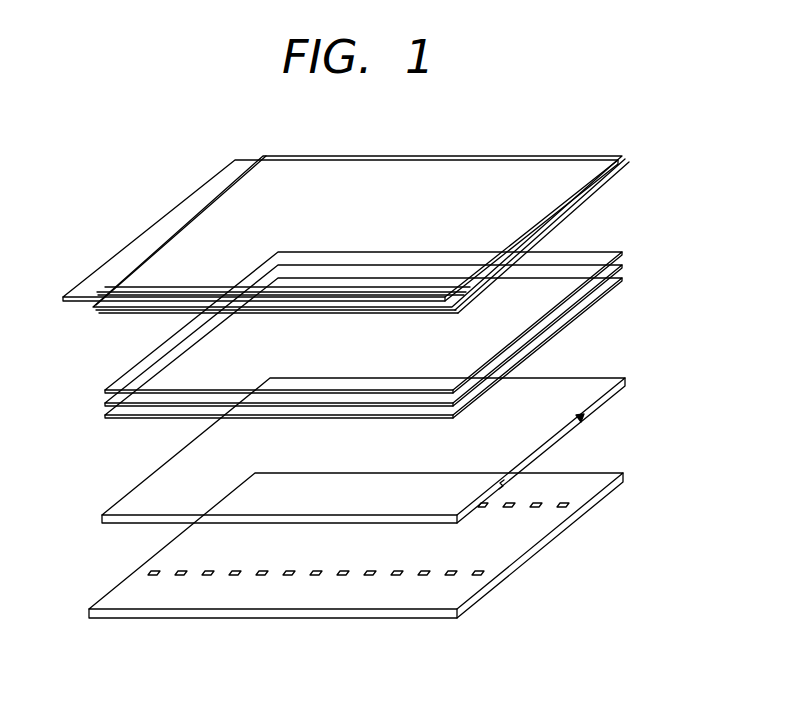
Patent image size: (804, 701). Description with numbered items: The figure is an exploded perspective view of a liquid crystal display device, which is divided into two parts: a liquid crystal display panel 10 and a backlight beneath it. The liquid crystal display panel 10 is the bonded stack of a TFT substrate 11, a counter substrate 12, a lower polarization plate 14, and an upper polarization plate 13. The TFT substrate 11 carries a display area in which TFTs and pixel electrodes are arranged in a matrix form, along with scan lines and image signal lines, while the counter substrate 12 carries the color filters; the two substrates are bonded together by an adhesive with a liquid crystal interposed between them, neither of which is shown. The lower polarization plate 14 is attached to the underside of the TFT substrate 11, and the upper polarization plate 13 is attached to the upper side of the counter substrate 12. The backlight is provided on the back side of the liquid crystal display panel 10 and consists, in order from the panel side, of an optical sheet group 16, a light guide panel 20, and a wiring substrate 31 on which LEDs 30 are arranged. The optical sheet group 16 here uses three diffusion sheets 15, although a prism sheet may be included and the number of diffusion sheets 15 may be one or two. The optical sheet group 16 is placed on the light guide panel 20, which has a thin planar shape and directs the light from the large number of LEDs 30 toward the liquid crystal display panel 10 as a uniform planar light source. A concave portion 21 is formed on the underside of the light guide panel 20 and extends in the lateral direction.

The liquid crystal display panel 10 is at (686, 80).
The TFT substrate 11 is at (610, 176).
The counter substrate 12 is at (601, 178).
The upper polarization plate 13 is at (545, 175).
The lower polarization plate 14 is at (427, 310).
The diffusion sheet 15 is at (622, 251).
The optical sheet group 16 is at (686, 215).
The light guide panel 20 is at (552, 445).
The concave portion 21 is at (583, 418).
The LED 30 is at (371, 578).
The wiring substrate 31 is at (580, 518).